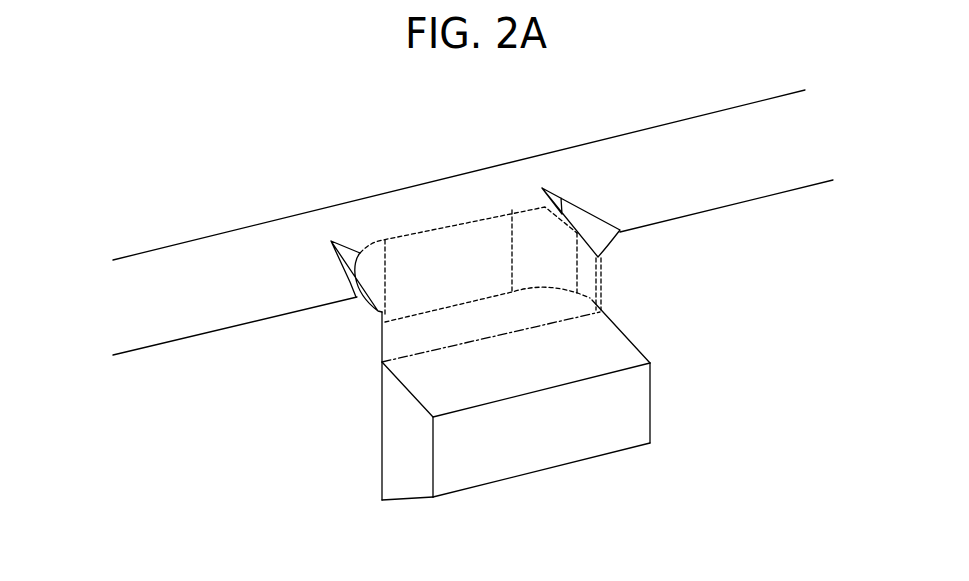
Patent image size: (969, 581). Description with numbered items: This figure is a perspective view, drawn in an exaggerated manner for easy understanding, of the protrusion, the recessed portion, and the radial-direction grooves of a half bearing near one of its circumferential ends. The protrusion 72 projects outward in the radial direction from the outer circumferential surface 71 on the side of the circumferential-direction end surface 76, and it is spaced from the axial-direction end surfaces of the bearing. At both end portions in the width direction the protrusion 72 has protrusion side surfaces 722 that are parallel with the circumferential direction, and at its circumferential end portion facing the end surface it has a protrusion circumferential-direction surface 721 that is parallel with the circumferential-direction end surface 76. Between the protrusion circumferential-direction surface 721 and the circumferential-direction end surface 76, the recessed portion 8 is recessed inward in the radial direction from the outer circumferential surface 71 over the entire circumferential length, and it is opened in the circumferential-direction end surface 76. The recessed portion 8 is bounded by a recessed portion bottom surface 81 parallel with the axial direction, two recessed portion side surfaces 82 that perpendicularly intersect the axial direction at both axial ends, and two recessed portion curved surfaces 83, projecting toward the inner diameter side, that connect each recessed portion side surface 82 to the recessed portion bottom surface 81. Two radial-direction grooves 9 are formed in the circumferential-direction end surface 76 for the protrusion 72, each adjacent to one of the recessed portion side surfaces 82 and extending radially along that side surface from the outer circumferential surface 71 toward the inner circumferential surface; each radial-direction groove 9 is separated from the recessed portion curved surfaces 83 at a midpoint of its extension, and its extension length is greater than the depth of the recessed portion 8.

The circumferential-direction end surface 76 is at (572, 167).
The radial-direction groove 9 is at (347, 281).
The recessed portion 8 is at (480, 280).
The recessed portion bottom surface 81 is at (477, 253).
The recessed portion side surface 82 is at (590, 287).
The recessed portion curved surface 83 is at (386, 293).
The protrusion 72 is at (542, 430).
The protrusion circumferential-direction surface 721 is at (512, 387).
The protrusion side surface 722 is at (400, 437).
The outer circumferential surface 71 is at (635, 485).